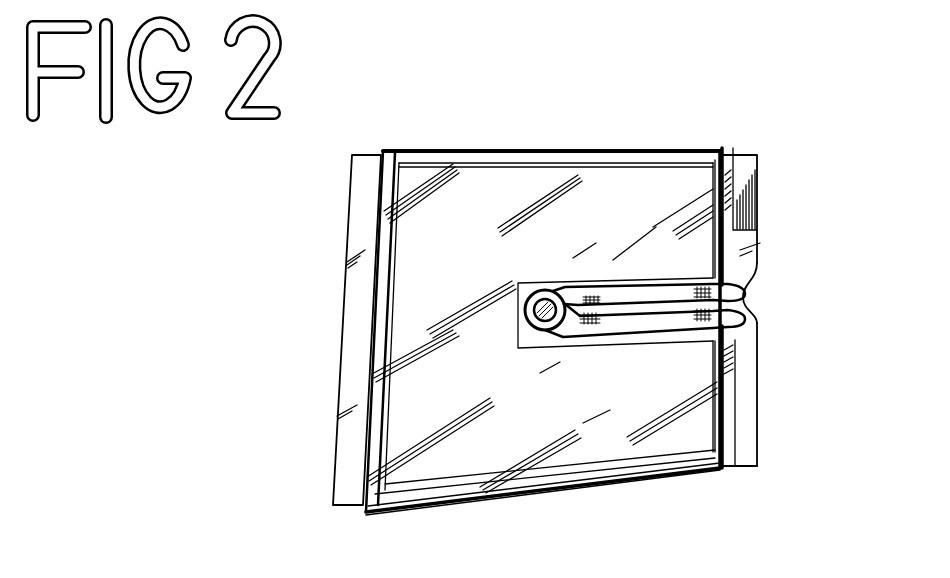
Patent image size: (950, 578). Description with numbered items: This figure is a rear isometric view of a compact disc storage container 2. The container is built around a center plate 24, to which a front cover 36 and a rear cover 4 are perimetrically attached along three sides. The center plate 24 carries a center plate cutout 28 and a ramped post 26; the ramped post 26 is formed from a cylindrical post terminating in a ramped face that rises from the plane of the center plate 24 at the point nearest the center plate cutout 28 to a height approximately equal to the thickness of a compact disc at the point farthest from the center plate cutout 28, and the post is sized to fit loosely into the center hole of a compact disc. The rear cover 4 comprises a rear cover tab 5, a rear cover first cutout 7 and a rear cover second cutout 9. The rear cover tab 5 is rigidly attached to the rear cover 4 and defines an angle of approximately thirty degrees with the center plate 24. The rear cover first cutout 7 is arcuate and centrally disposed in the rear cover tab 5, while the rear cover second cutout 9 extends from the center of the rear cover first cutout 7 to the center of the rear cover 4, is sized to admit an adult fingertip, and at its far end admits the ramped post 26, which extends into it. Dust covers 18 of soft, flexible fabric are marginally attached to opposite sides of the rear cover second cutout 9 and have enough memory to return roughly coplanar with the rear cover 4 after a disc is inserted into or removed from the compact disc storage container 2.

The compact disc storage container 2 is at (212, 213).
The rear cover 4 is at (652, 151).
The rear cover tab 5 is at (730, 150).
The rear cover first cutout 7 is at (746, 258).
The rear cover second cutout 9 is at (621, 334).
The dust covers 18 is at (746, 302).
The center plate 24 is at (345, 331).
The ramped post 26 is at (551, 291).
The center plate cutout 28 is at (757, 337).
The front cover 36 is at (684, 482).